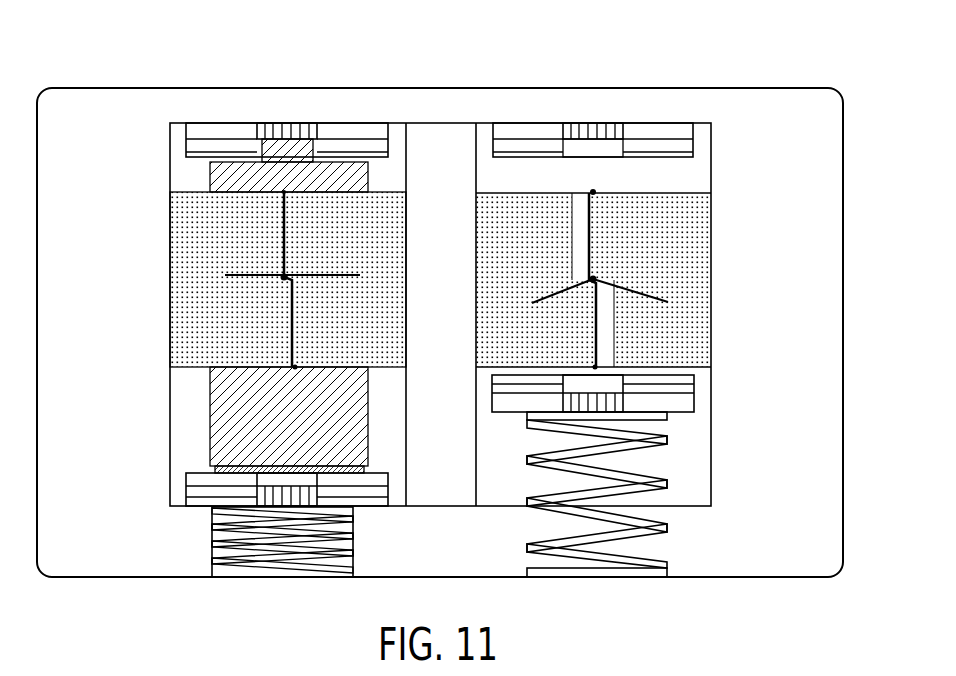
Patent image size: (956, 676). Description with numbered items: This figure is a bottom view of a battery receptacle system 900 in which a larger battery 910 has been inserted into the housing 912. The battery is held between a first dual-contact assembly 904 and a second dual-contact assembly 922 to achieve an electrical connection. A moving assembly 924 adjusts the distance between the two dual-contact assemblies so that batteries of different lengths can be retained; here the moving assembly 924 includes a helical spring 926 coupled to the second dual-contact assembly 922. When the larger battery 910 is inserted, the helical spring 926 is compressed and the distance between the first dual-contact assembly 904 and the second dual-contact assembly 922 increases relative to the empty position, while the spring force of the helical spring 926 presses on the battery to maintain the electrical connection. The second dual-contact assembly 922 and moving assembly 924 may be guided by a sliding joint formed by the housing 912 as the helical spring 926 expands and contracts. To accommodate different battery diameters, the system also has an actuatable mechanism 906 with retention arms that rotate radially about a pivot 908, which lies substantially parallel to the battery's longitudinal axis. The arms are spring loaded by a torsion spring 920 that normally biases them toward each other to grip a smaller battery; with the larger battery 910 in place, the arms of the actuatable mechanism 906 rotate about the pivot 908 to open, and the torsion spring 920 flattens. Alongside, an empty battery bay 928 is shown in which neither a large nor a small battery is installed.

The battery receptacle system 900 is at (772, 50).
The first dual-contact assembly 904 is at (353, 123).
The actuatable mechanism 906 is at (170, 277).
The pivot 908 is at (283, 192).
The larger battery 910 is at (210, 178).
The housing 912 is at (457, 88).
The torsion spring 920 is at (284, 277).
The second dual-contact assembly 922 is at (187, 487).
The moving assembly 924 is at (126, 500).
The helical spring 926 is at (213, 547).
The empty battery bay 928 is at (730, 185).